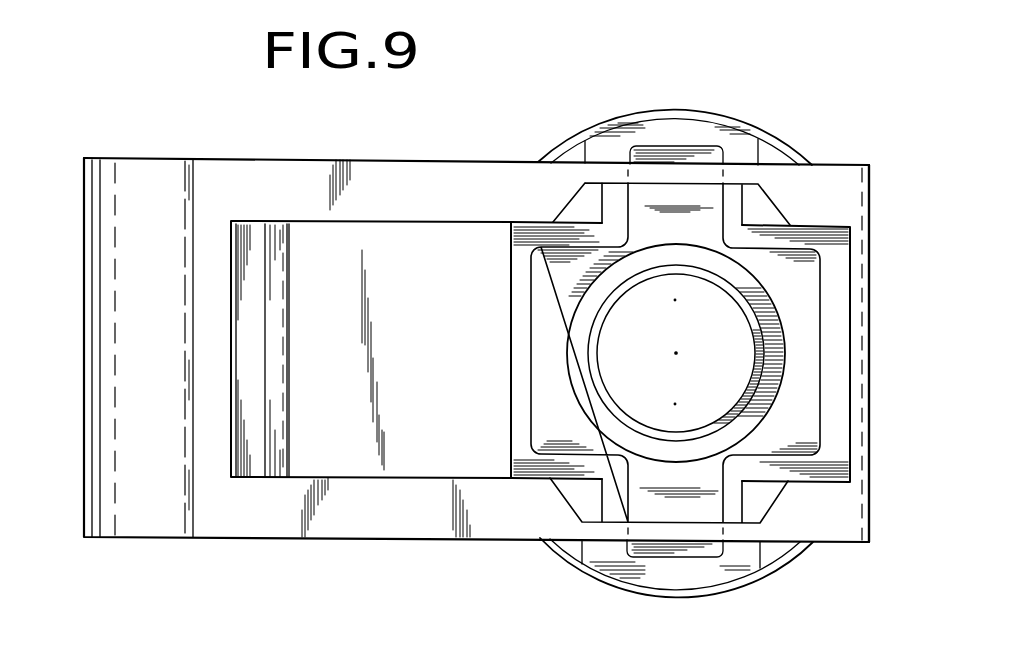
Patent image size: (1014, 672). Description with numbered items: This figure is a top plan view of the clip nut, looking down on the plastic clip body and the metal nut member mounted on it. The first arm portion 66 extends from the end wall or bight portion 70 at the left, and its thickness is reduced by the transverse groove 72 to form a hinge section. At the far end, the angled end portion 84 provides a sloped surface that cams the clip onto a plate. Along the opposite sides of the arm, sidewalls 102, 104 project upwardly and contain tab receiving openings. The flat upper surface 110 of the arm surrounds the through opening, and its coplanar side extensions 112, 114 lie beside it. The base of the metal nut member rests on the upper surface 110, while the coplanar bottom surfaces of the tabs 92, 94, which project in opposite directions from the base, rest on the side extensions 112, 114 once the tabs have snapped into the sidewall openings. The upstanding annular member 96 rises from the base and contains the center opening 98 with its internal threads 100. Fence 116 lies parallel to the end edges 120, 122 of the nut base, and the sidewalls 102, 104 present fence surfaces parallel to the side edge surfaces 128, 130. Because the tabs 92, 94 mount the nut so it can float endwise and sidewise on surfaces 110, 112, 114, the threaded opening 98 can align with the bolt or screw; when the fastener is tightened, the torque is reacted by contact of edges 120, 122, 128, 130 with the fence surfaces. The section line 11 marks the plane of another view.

The section line 11- 11 is at (65, 232).
The first arm portion 66 is at (343, 468).
The end wall or bight portion 70 is at (84, 517).
The transverse groove 72 is at (191, 500).
The end portion 84 is at (868, 380).
The tab 92 is at (707, 550).
The tab 94 is at (707, 152).
The upstanding annular member 96 is at (797, 415).
The center opening 98 is at (612, 329).
The internal threads 100 is at (620, 398).
The sidewall 102 is at (427, 523).
The sidewall 104 is at (466, 180).
The upper surface 110 is at (838, 300).
The side extension 112 is at (613, 556).
The side extension 114 is at (614, 142).
The fence 116 is at (512, 292).
The end edge 120 is at (530, 358).
The end edge 122 is at (822, 353).
The side edge surface 128 is at (578, 455).
The side edge surface 130 is at (578, 247).